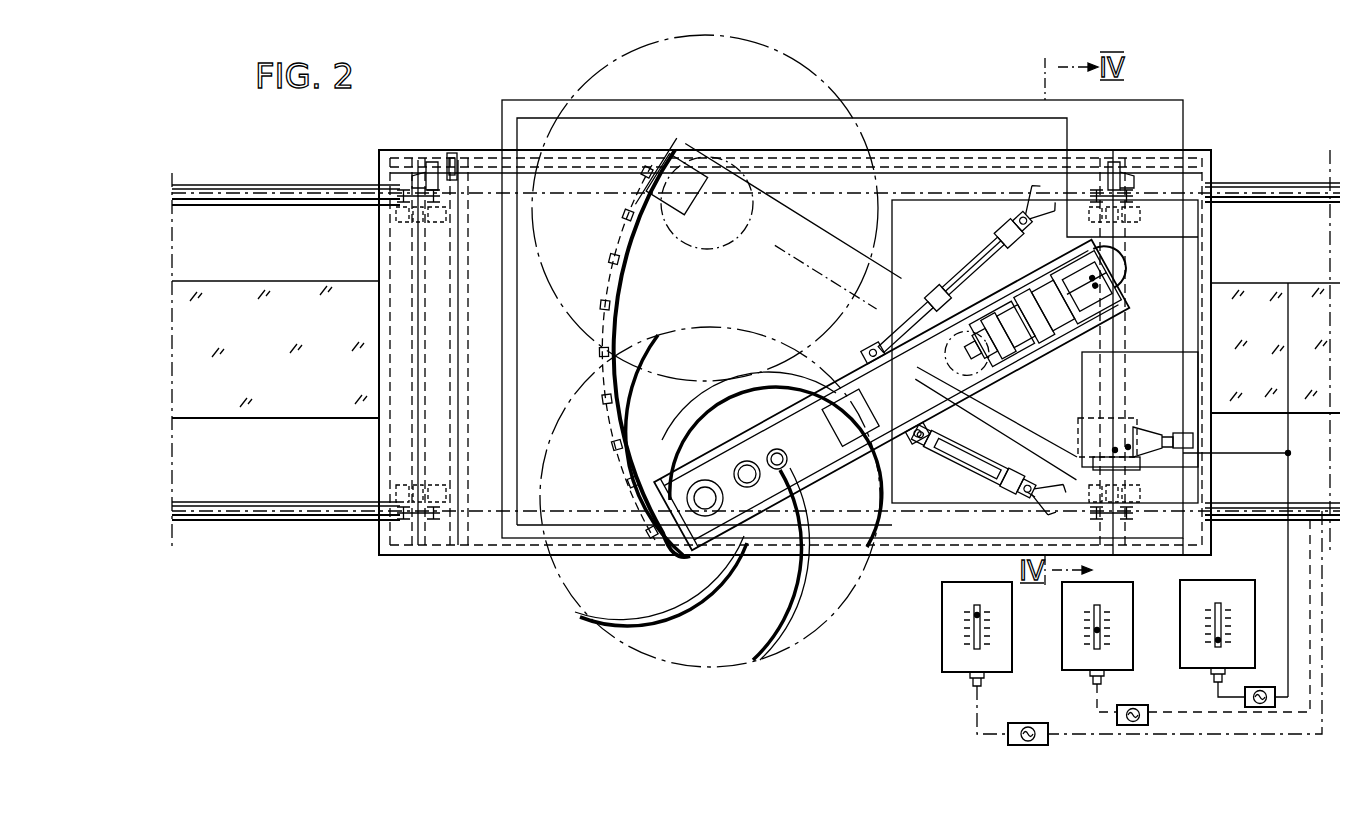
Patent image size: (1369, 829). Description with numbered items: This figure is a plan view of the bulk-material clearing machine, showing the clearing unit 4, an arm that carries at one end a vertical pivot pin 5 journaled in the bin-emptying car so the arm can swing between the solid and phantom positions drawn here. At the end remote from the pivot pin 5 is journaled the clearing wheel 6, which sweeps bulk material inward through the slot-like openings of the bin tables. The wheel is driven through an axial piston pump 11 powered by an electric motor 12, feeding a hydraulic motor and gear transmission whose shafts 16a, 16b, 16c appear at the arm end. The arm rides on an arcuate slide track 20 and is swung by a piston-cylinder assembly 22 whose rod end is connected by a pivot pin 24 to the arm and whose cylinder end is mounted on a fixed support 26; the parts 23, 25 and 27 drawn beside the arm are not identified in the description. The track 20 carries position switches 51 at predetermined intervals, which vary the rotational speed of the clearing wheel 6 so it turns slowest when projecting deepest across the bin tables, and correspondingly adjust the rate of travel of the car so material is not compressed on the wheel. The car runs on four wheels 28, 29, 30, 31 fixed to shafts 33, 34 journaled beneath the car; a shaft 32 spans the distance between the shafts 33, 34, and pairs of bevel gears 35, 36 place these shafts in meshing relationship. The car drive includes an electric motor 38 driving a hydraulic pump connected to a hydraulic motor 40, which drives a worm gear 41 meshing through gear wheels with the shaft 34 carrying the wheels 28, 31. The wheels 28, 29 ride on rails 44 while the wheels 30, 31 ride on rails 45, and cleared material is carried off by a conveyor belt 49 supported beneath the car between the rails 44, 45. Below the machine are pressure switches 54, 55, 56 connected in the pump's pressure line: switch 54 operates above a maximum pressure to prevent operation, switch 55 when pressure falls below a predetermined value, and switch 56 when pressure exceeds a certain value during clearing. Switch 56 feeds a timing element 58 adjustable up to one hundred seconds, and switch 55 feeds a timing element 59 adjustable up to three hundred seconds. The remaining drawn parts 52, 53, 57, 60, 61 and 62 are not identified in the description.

The clearing unit 4 is at (1027, 275).
The pivot pin 5 is at (778, 617).
The clearing wheel 6 is at (815, 75).
The axial piston pump 11 is at (1008, 343).
The electric motor 12 is at (1120, 303).
The shaft of gear transmission 16a is at (783, 467).
The shaft of gear transmission 16b is at (745, 475).
The shaft of gear transmission 16c is at (703, 505).
The arcuate slide track 20 is at (616, 245).
The piston-cylinder assembly 22 is at (975, 268).
The hydraulic cylinder 23 is at (960, 463).
The pivot pin 24 is at (874, 350).
The pivot joint 25 is at (912, 440).
The fixed support 26 is at (1092, 278).
The cylinder joint 27 is at (1032, 498).
The wheel 28 is at (1098, 186).
The wheel 29 is at (406, 186).
The wheel 30 is at (410, 520).
The wheel 31 is at (1137, 510).
The shaft 32 is at (457, 166).
The shaft 33 is at (418, 318).
The shaft 34 is at (1114, 240).
The bevel gears 35 is at (430, 170).
The bevel gears 36 is at (1117, 170).
The electric motor 38 is at (1090, 432).
The hydraulic motor 40 is at (1193, 440).
The worm gear 41 is at (1128, 430).
The rails 44 is at (1258, 185).
The rails 45 is at (1252, 456).
The conveyor belt 49 is at (298, 402).
The position switches 51 is at (597, 325).
The outer frame 52 is at (985, 100).
The inner frame 53 is at (920, 118).
The pressure switch 54 is at (1193, 598).
The pressure switch 55 is at (945, 598).
The pressure switch 56 is at (1073, 628).
The transducer 57 is at (1263, 687).
The timing element 58 is at (1133, 706).
The timing element 59 is at (1036, 723).
The control line 60 is at (1288, 548).
The control line 61 is at (1308, 575).
The control line 62 is at (1320, 617).